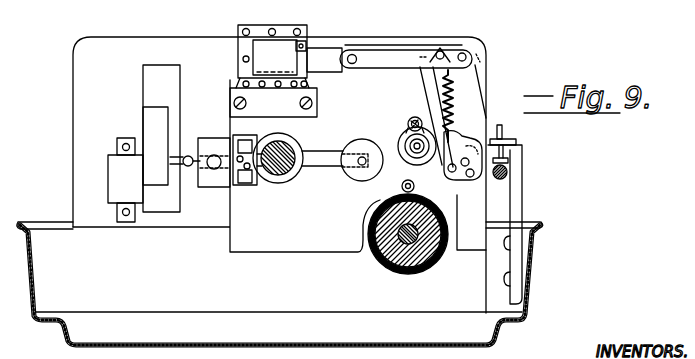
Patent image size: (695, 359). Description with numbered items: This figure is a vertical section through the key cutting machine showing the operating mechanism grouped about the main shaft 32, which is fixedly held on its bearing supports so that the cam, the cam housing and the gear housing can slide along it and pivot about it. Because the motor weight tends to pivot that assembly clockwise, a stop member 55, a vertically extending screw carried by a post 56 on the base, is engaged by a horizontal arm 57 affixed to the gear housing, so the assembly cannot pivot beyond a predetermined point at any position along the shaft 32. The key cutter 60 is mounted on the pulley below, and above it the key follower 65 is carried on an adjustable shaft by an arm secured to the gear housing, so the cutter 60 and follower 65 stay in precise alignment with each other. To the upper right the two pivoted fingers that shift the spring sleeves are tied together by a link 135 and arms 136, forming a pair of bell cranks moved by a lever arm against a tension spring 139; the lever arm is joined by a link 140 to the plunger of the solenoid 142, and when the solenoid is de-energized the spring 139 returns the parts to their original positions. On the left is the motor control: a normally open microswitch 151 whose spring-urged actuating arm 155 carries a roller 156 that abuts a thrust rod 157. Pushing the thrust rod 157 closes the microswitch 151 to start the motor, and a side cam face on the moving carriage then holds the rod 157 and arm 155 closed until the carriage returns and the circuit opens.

The main shaft 32 is at (278, 172).
The stop member 55 is at (510, 141).
The post 56 is at (518, 196).
The horizontal arm 57 is at (518, 178).
The key cutter 60 is at (380, 260).
The key follower 65 is at (405, 139).
The link 135 is at (420, 80).
The arms 136 is at (440, 42).
The tension spring 139 is at (444, 101).
The link 140 is at (116, 175).
The solenoid 142 is at (250, 26).
The microswitch 151 is at (152, 122).
The actuating arm 155 is at (181, 152).
The roller 156 is at (187, 168).
The thrust rod 157 is at (191, 156).